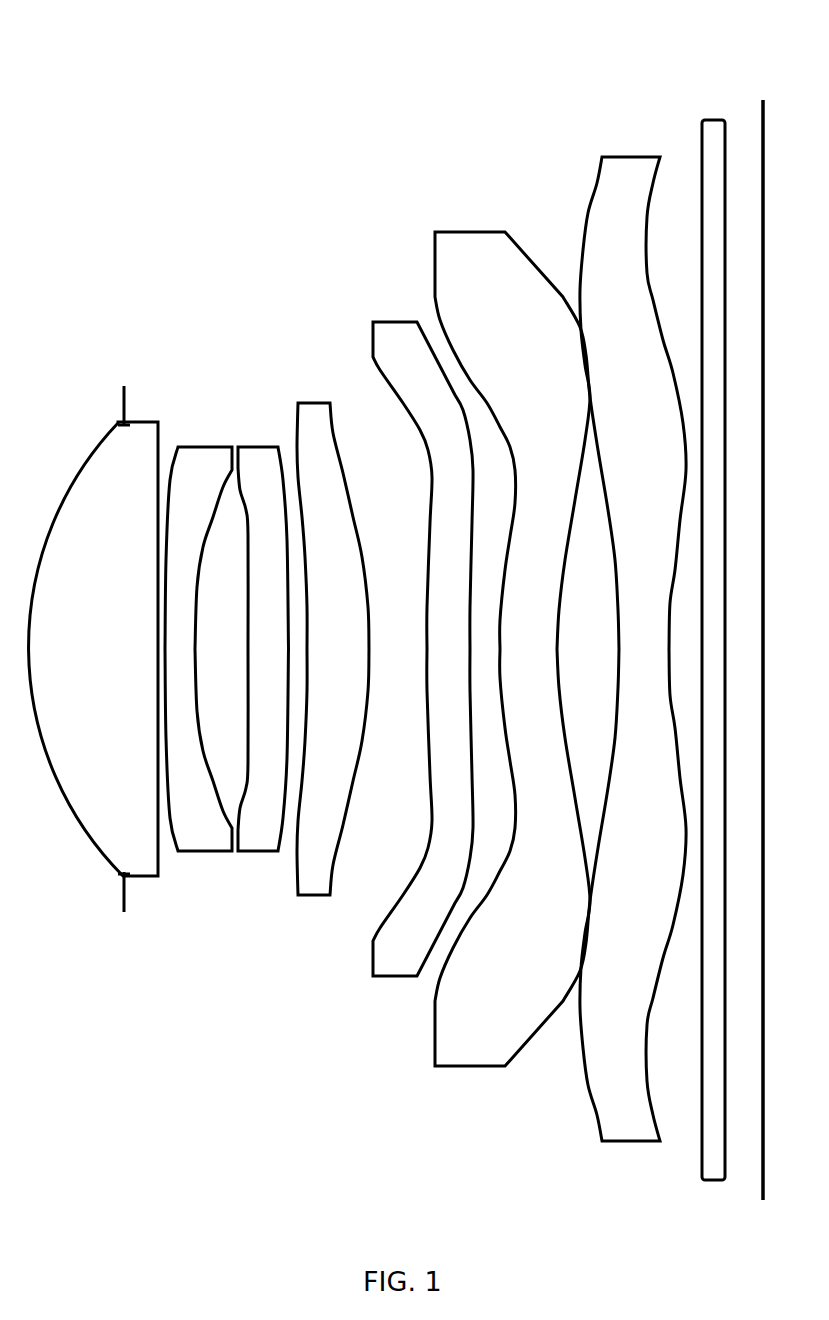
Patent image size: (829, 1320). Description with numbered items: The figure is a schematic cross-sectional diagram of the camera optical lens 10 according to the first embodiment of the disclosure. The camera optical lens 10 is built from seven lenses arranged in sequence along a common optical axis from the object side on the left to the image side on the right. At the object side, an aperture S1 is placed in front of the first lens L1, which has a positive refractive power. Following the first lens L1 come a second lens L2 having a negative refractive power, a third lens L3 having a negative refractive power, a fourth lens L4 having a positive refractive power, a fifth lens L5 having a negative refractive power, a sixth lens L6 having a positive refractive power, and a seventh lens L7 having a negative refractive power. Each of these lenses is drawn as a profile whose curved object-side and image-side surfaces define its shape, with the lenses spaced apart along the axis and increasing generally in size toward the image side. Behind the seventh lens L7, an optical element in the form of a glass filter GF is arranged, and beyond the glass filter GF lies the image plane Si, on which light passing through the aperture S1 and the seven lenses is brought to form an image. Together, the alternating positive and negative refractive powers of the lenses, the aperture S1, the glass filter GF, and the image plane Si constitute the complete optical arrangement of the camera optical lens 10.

The camera optical lens 10 is at (409, 33).
The aperture S1 is at (129, 637).
The first lens L1 is at (94, 639).
The second lens L2 is at (198, 634).
The third lens L3 is at (263, 634).
The fourth lens L4 is at (333, 636).
The fifth lens L5 is at (423, 637).
The sixth lens L6 is at (527, 636).
The seventh lens L7 is at (621, 634).
The glass filter GF is at (715, 637).
The image plane Si is at (763, 636).